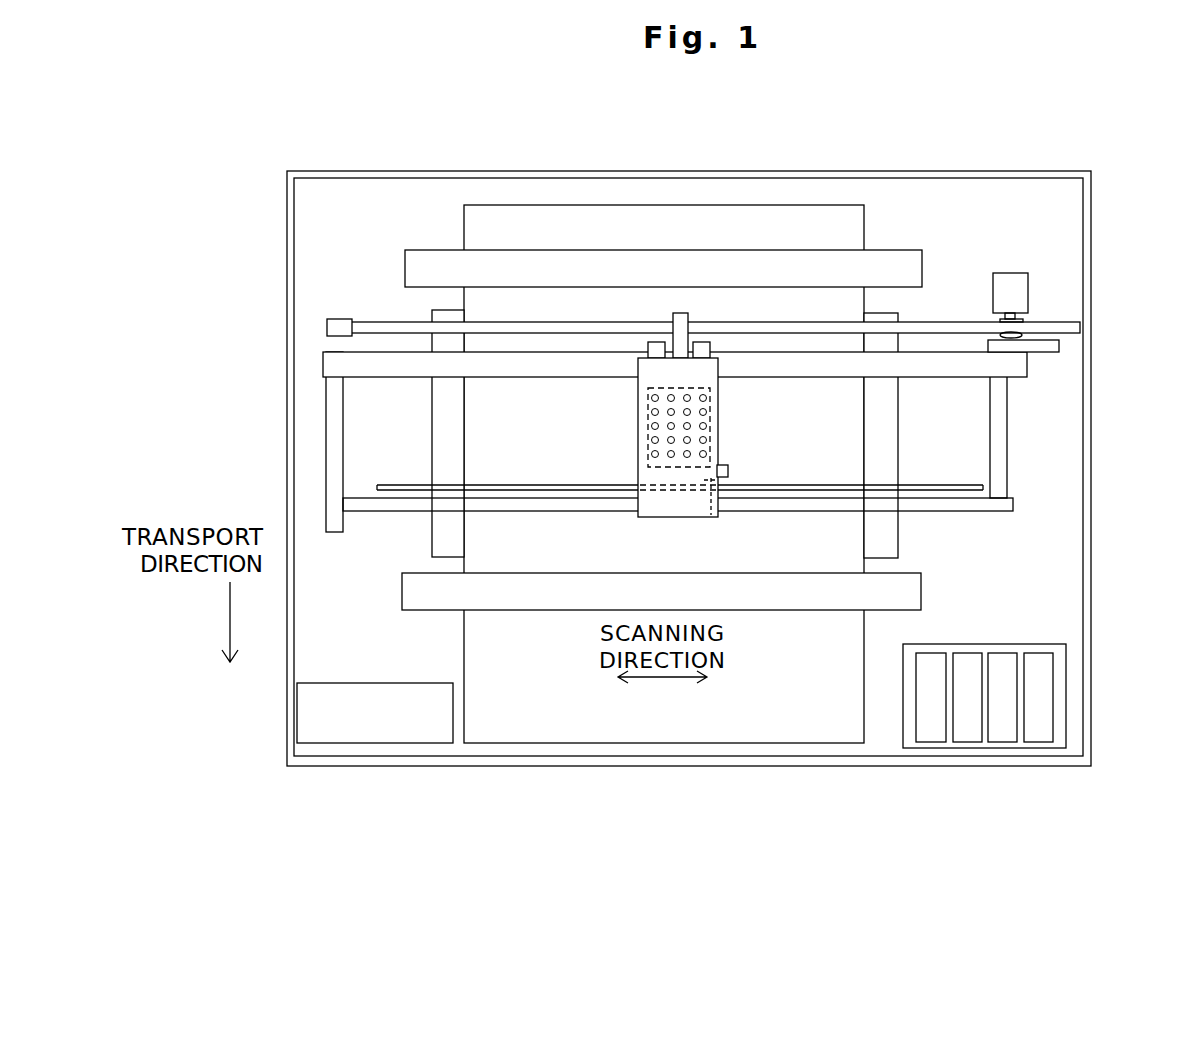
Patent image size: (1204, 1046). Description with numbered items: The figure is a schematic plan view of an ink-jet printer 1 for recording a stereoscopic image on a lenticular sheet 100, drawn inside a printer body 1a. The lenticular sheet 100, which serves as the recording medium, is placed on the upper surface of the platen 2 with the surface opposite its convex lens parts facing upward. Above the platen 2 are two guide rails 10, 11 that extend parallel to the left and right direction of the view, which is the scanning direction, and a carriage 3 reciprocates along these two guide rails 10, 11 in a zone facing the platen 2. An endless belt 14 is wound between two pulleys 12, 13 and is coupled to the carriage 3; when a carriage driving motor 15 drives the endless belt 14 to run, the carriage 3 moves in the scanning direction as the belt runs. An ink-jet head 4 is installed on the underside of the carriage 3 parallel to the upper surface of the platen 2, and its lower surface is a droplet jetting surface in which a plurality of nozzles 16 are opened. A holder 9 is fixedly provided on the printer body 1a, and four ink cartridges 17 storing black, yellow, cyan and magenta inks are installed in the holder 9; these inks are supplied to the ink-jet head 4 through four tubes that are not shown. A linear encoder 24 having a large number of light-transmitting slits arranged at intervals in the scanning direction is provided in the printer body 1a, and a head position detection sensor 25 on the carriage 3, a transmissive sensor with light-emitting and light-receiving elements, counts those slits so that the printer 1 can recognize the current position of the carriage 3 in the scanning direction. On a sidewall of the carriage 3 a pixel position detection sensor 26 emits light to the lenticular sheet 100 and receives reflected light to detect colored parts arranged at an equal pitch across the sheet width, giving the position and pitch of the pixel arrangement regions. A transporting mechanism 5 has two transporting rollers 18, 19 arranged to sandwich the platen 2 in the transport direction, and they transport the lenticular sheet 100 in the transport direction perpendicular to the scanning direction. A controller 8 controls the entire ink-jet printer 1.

The ink-jet printer 1 is at (1042, 134).
The printer body 1a is at (773, 172).
The platen 2 is at (432, 540).
The carriage 3 is at (673, 503).
The ink-jet head 4 is at (712, 438).
The transporting mechanism 5 is at (927, 243).
The controller 8 is at (297, 716).
The holder 9 is at (1066, 680).
The guide rail 10 is at (953, 353).
The guide rail 11 is at (966, 513).
The pulley 12 is at (1022, 322).
The pulley 13 is at (342, 320).
The endless belt 14 is at (925, 323).
The carriage driving motor 15 is at (1003, 284).
The nozzles 16 is at (716, 402).
The ink cartridges 17 is at (1037, 737).
The transporting roller 18 is at (884, 268).
The transporting roller 19 is at (893, 592).
The linear encoder 24 is at (942, 485).
The head position detection sensor 25 is at (716, 518).
The pixel position detection sensor 26 is at (729, 477).
The lenticular sheet 100 is at (478, 636).